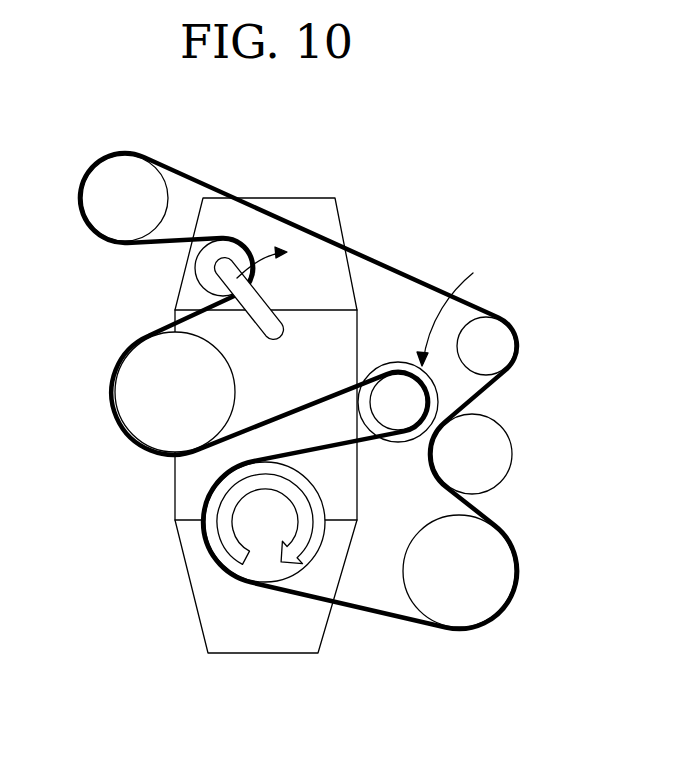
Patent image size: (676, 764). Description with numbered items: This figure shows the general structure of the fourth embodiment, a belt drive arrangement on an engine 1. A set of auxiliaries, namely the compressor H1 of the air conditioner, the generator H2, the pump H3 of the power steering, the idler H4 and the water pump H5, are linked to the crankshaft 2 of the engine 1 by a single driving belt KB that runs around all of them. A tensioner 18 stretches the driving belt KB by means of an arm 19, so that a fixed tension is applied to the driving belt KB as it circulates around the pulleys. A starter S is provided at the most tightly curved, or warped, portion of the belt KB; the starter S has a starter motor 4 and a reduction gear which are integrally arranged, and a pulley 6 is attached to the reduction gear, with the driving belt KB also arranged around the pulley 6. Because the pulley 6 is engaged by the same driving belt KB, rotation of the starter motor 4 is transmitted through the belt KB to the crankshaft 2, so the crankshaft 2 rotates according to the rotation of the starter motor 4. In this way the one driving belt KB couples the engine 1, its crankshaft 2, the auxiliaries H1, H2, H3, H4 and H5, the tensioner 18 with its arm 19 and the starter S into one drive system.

The engine 1 is at (308, 197).
The crankshaft 2 is at (210, 537).
The starter motor 4 is at (393, 363).
The pulley 6 is at (397, 395).
The tensioner 18 is at (203, 265).
The arm 19 is at (258, 307).
The compressor H1 is at (495, 585).
The generator H2 is at (505, 347).
The pump H3 is at (102, 175).
The idler H4 is at (497, 460).
The water pump H5 is at (125, 403).
The driving belt KB is at (375, 612).
The starter S is at (449, 305).